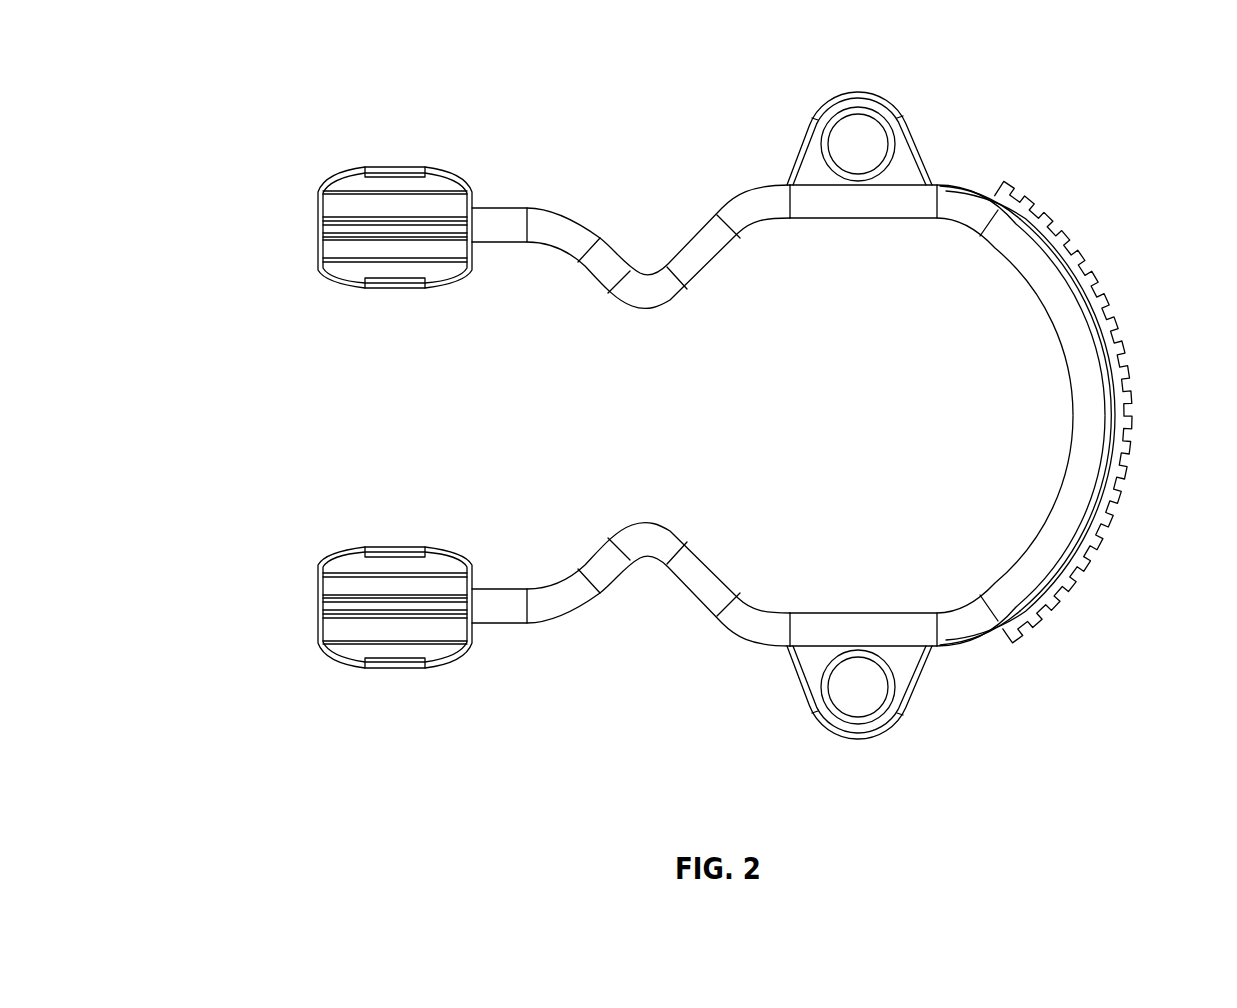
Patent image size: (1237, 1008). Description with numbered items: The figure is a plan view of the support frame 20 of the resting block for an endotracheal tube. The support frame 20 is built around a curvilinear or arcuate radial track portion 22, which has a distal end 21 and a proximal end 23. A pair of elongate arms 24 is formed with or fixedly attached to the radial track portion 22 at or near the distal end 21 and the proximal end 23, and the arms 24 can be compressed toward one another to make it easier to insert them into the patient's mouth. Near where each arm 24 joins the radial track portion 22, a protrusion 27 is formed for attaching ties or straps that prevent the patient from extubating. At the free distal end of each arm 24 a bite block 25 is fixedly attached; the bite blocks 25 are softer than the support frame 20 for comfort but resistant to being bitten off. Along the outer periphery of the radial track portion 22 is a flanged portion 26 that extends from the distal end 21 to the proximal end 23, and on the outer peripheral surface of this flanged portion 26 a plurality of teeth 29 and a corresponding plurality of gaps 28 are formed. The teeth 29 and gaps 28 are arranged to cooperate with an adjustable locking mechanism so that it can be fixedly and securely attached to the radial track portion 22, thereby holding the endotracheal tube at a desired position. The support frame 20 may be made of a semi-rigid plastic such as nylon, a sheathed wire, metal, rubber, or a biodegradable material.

The support frame 20 is at (252, 74).
The distal end 21 is at (1011, 184).
The radial track portion 22 is at (1154, 468).
The proximal end 23 is at (990, 658).
The elongate arm 24 is at (650, 266).
The bite block 25 is at (395, 168).
The flanged portion 26 is at (1093, 388).
The protrusion 27 is at (876, 116).
The gap 28 is at (1126, 382).
The tooth 29 is at (1082, 243).